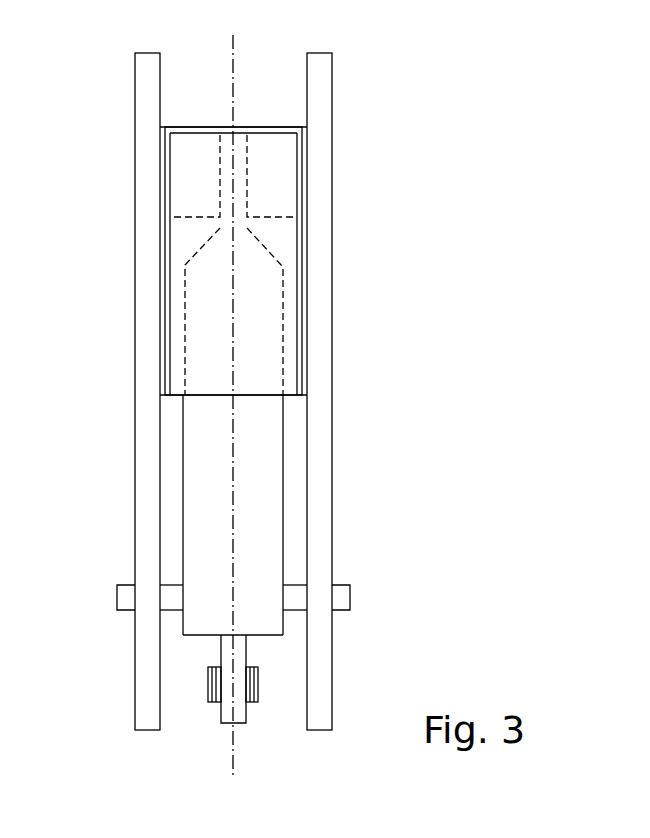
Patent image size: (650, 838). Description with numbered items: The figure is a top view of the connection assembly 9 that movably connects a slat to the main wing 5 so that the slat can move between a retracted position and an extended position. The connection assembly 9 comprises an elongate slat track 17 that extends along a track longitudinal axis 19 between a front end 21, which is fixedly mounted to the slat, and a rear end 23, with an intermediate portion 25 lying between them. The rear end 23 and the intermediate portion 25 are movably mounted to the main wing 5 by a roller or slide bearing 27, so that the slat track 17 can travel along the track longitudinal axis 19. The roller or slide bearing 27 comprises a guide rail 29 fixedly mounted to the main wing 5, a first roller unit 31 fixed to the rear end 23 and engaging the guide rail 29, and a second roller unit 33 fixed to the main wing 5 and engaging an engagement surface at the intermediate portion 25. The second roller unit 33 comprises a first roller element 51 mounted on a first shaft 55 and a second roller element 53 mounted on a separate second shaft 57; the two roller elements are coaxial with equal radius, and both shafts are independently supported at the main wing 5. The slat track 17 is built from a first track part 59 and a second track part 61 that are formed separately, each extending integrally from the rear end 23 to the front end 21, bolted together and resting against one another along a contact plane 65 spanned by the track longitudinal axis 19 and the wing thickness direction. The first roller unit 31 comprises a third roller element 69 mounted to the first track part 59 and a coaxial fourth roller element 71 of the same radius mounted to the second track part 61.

The connection assembly 9 is at (366, 85).
The main wing 5 is at (322, 420).
The slat track 17 is at (198, 457).
The track longitudinal axis 19 is at (303, 405).
The front end 21 is at (270, 630).
The rear end 23 is at (228, 127).
The intermediate portion 25 is at (267, 457).
The roller or slide bearing 27 is at (321, 408).
The guide rail 29 is at (285, 243).
The first roller unit 31 is at (323, 163).
The second roller unit 33 is at (304, 607).
The first roller element 51 is at (294, 579).
The second roller element 53 is at (172, 579).
The first shaft 55 is at (348, 593).
The second shaft 57 is at (123, 595).
The first track part 59 is at (268, 522).
The second track part 61 is at (202, 515).
The contact plane 65 is at (233, 757).
The third roller element 69 is at (272, 148).
The fourth roller element 71 is at (188, 148).